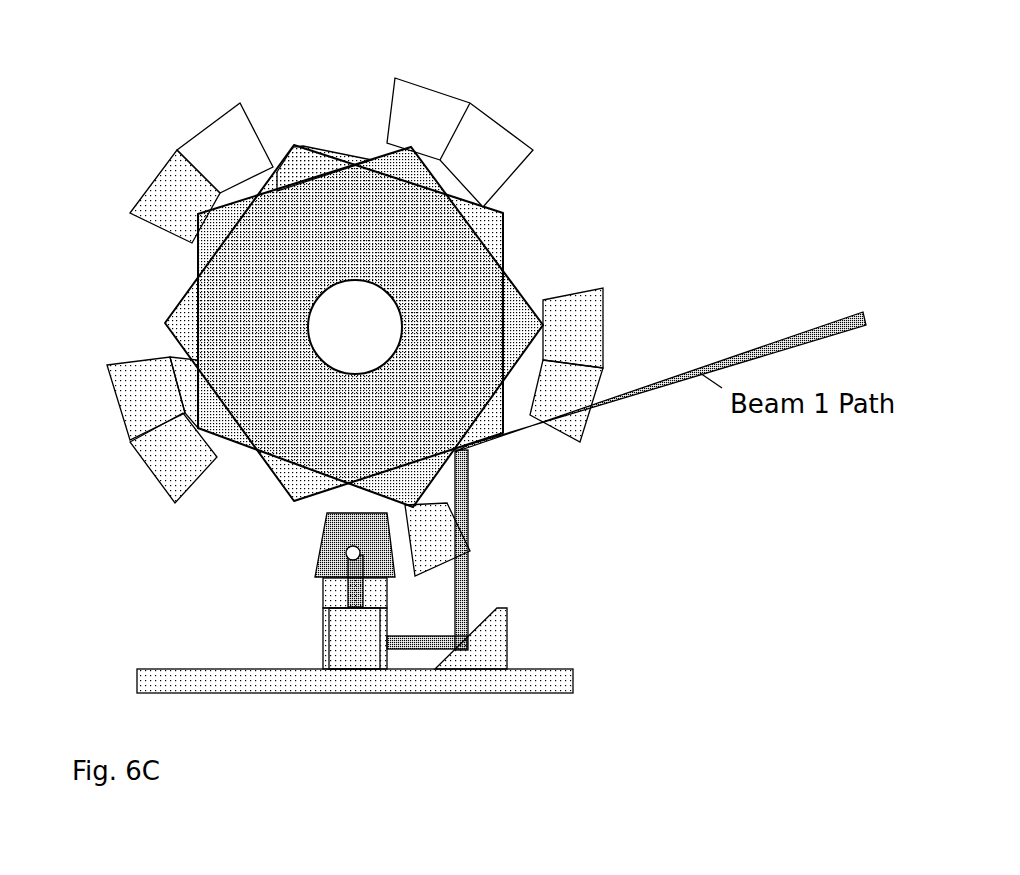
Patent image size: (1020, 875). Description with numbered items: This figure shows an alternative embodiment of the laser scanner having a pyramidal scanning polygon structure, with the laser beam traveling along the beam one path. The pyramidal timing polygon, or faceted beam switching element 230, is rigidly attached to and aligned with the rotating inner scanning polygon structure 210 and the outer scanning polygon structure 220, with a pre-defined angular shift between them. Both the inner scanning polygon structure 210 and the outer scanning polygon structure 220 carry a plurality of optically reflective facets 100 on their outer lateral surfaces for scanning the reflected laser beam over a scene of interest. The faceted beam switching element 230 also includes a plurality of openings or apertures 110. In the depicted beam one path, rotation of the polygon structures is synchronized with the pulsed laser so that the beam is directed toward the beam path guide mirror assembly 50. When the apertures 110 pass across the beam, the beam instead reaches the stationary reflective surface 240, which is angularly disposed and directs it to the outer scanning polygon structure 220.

The beam path guide mirror assembly 50 is at (473, 683).
The optically reflective facets 100 is at (318, 148).
The apertures 110 is at (570, 253).
The inner scanning polygon structure 210 is at (513, 223).
The outer scanning polygon structure 220 is at (217, 302).
The faceted beam switching element 230 is at (143, 188).
The stationary reflective surface 240 is at (350, 578).